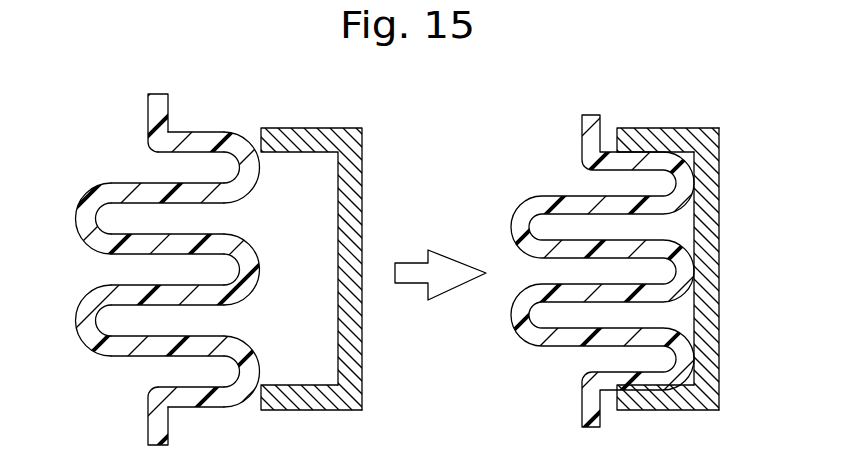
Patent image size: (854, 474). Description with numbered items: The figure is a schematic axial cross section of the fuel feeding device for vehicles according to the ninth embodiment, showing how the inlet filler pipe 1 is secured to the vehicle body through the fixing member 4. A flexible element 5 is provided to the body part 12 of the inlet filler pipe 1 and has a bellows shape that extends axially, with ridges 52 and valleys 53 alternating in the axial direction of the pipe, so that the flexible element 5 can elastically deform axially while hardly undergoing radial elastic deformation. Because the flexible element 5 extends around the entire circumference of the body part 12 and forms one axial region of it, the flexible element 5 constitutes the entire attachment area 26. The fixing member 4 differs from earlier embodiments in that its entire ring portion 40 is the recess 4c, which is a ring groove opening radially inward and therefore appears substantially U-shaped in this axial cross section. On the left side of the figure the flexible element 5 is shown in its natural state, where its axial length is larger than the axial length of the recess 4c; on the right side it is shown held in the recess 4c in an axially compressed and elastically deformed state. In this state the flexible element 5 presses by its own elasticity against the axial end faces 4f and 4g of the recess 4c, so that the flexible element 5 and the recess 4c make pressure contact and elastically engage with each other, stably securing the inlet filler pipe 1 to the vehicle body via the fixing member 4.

The inlet filler pipe 1 is at (163, 104).
The body part 12 is at (160, 425).
The attachment area 26 is at (260, 205).
The fixing member 4 is at (357, 200).
The recess 4c is at (359, 313).
The axial end face 4f is at (637, 157).
The axial end face 4g is at (633, 384).
The ring portion 40 is at (358, 365).
The flexible element 5 is at (273, 295).
The ridge 52 is at (243, 256).
The valley 53 is at (93, 200).